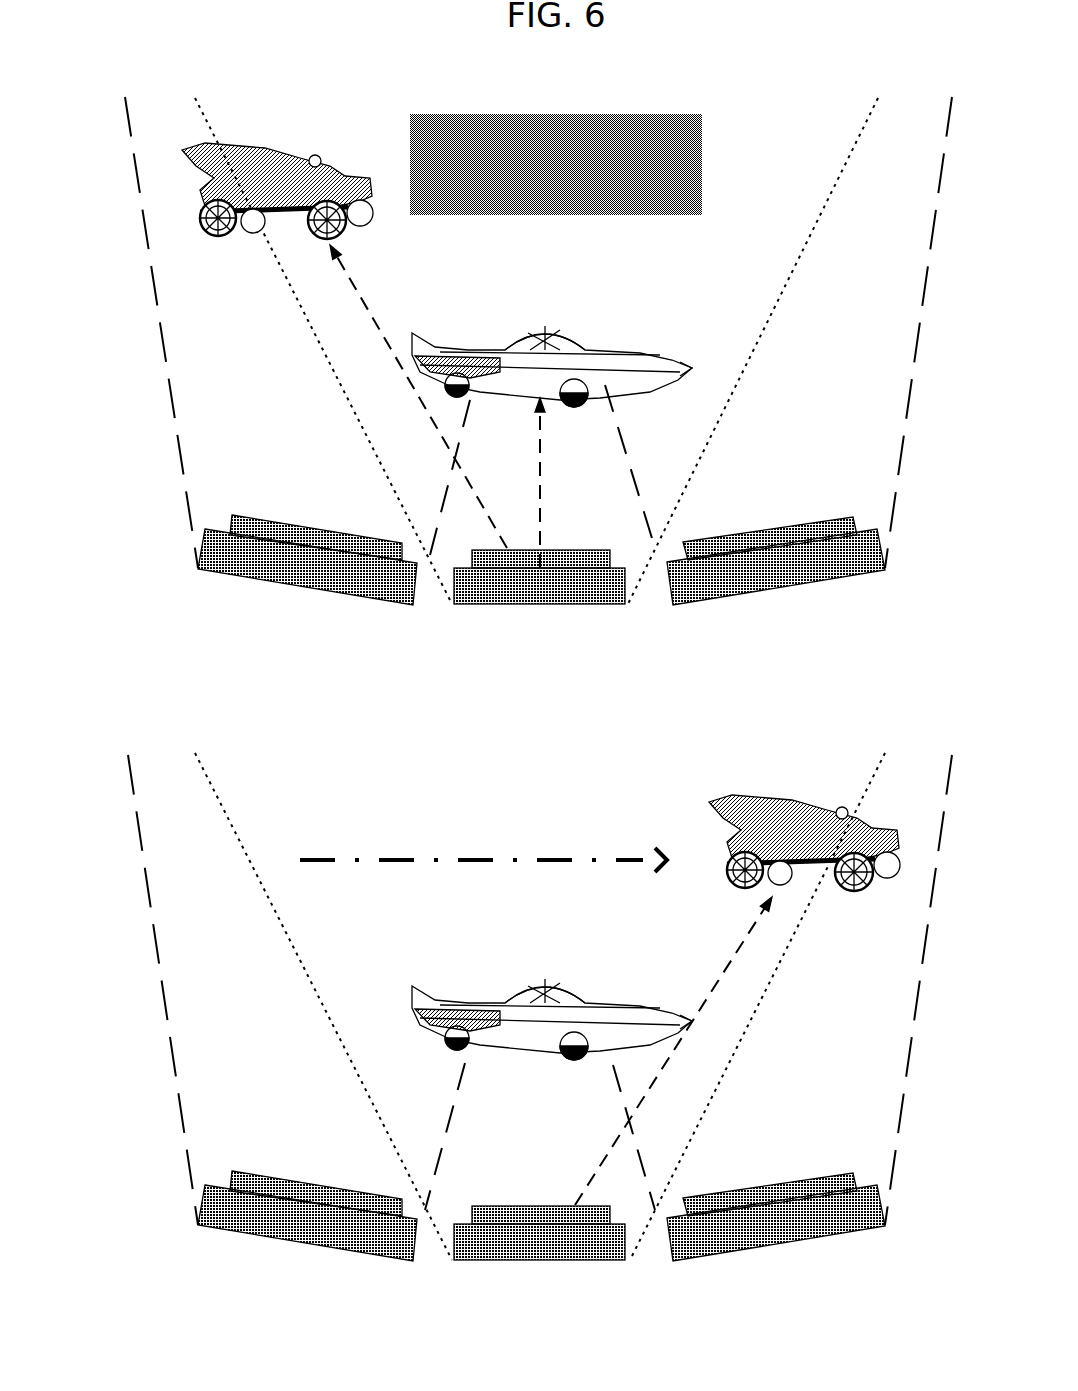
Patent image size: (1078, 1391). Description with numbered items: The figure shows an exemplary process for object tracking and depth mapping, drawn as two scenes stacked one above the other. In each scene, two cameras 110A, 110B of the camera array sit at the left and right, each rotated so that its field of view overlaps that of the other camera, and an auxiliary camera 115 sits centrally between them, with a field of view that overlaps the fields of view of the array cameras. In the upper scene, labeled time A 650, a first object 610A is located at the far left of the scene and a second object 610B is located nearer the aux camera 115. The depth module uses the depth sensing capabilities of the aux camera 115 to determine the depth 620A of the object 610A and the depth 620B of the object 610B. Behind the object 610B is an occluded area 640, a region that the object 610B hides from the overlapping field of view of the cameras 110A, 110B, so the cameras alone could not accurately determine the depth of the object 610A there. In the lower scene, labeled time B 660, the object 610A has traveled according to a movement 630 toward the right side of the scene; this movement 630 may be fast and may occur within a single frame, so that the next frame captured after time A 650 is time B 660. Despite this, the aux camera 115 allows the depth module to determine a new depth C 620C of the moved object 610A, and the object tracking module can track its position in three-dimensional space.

The camera 110A is at (307, 914).
The camera 110B is at (776, 915).
The auxiliary camera 115 is at (539, 941).
The object 610A is at (541, 485).
The object 610B is at (552, 675).
The depth of object 610A 620A is at (369, 293).
The depth of object 610B 620B is at (581, 483).
The depth C 620C is at (726, 956).
The movement 630 is at (428, 841).
The occluded area 640 is at (556, 164).
The time A 650 is at (147, 592).
The time B 660 is at (160, 1205).